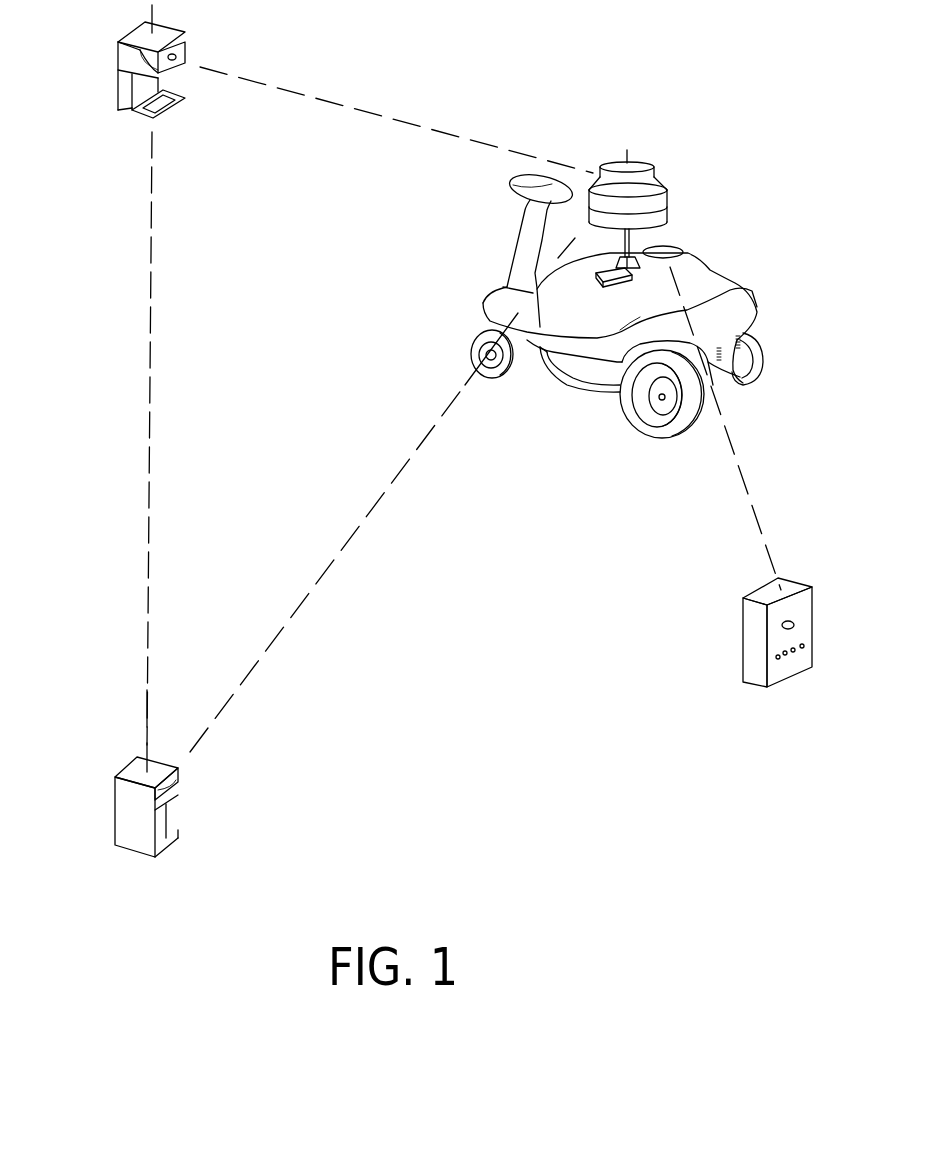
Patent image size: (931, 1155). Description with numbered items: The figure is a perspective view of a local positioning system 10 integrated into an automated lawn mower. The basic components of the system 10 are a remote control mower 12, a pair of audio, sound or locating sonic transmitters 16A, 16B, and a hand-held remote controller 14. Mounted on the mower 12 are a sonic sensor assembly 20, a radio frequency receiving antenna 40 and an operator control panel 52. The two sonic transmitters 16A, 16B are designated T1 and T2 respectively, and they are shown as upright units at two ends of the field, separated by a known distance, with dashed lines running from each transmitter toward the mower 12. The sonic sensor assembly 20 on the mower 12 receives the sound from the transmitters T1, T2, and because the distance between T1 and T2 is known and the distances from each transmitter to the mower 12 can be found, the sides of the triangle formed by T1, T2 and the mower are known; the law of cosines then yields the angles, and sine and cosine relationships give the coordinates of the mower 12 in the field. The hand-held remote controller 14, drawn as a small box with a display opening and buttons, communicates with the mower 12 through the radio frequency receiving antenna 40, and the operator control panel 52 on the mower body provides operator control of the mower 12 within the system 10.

The system 10 is at (540, 646).
The remote control mower 12 is at (497, 296).
The hand-held remote controller 14 is at (742, 653).
The locating sonic transmitter 16A is at (115, 795).
The locating sonic transmitter 16B is at (118, 60).
The sonic sensor assembly 20 is at (668, 190).
The radio frequency receiving antenna 40 is at (663, 246).
The operator control panel 52 is at (597, 282).
The first transmitter designation T1 is at (373, 495).
The second transmitter designation T2 is at (393, 88).